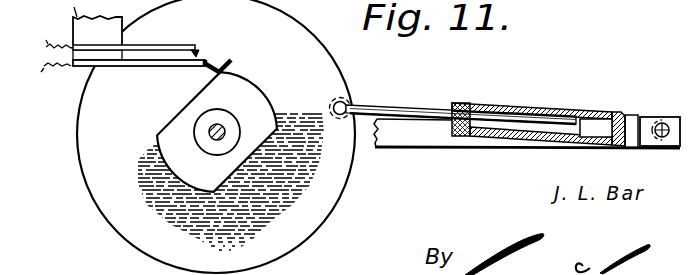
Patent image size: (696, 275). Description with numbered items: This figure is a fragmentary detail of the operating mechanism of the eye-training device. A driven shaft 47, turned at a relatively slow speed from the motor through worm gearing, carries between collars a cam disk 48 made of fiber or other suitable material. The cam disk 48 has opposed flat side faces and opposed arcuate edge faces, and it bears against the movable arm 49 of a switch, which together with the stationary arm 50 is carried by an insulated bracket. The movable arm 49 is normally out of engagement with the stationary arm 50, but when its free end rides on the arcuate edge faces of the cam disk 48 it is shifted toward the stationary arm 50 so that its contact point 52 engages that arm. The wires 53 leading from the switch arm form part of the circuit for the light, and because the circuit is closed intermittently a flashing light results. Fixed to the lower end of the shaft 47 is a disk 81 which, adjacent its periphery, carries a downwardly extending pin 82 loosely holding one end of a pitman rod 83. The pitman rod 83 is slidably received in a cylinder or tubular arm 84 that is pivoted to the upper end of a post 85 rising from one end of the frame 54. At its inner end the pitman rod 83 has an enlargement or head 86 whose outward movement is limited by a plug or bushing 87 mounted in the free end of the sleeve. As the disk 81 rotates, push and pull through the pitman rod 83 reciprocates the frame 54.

The driven shaft 47 is at (212, 132).
The cam disk 48 is at (257, 105).
The movable arm 49 is at (143, 66).
The stationary arm 50 is at (162, 50).
The contact point 52 is at (196, 55).
The wires 53 is at (55, 57).
The frame 54 is at (430, 137).
The disk 81 is at (298, 225).
The pin 82 is at (346, 102).
The pitman rod 83 is at (403, 110).
The tubular arm 84 is at (537, 107).
The post 85 is at (664, 117).
The head 86 is at (590, 121).
The bushing 87 is at (457, 101).